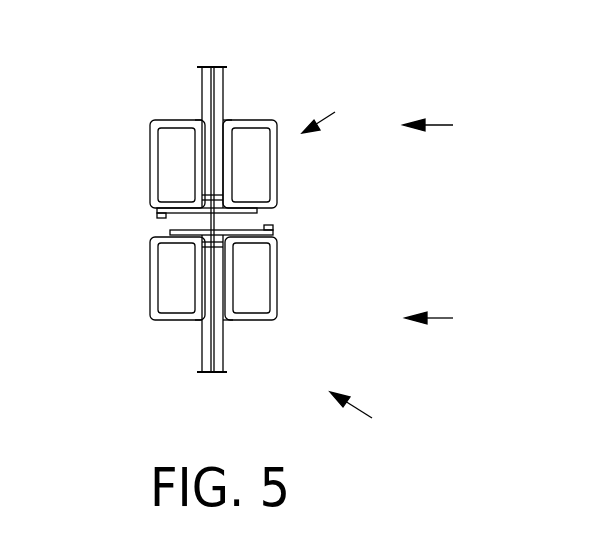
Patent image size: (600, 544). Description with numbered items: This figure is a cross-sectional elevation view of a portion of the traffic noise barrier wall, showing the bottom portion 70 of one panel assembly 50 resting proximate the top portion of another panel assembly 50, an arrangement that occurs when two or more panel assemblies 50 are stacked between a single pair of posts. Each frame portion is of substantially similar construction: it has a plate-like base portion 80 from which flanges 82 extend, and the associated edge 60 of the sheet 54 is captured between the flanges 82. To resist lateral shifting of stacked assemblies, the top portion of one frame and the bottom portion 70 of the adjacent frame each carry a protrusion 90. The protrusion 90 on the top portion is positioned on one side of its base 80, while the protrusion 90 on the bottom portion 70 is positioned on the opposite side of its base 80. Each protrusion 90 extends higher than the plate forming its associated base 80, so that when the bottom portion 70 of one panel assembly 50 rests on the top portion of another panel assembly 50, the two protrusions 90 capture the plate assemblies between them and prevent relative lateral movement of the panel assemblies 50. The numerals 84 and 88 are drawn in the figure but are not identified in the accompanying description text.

The panel assembly 50 is at (445, 223).
The sheet 54 is at (214, 95).
The edge 60 is at (222, 110).
The bottom portion 70 is at (334, 112).
The base portion 80 is at (167, 231).
The flanges 82 is at (244, 120).
The bobbin 84 is at (200, 120).
The direction of force 88 is at (368, 417).
The protrusion 90 is at (157, 214).